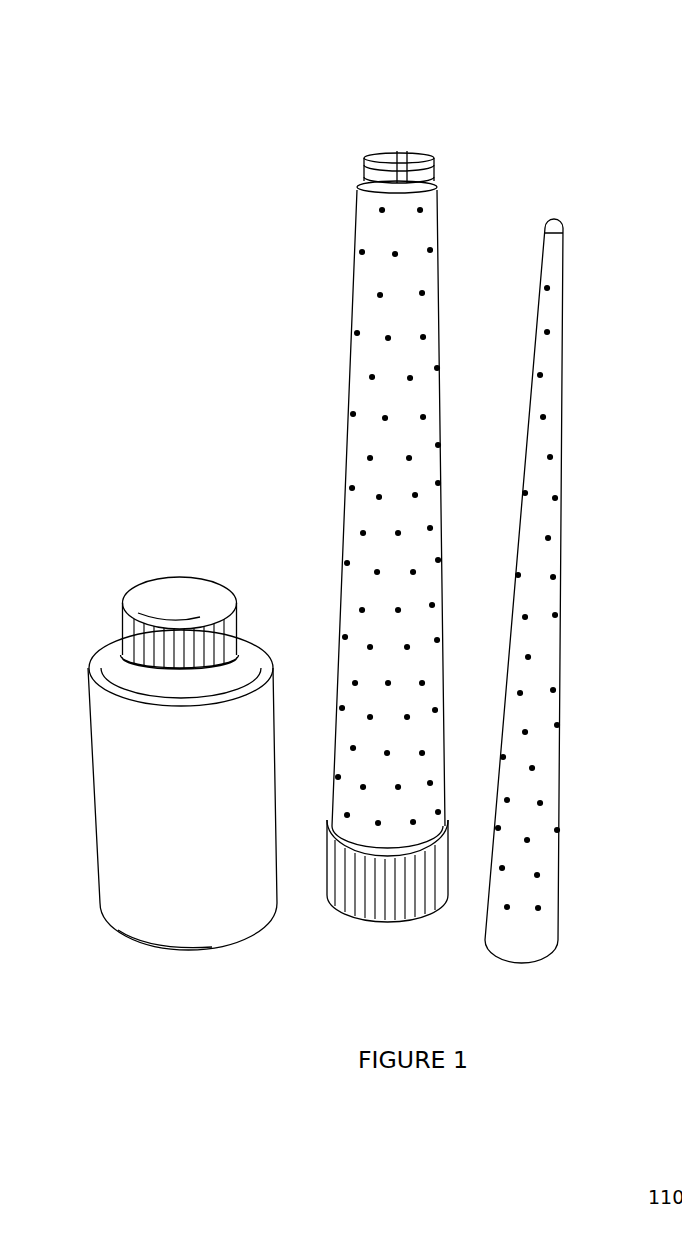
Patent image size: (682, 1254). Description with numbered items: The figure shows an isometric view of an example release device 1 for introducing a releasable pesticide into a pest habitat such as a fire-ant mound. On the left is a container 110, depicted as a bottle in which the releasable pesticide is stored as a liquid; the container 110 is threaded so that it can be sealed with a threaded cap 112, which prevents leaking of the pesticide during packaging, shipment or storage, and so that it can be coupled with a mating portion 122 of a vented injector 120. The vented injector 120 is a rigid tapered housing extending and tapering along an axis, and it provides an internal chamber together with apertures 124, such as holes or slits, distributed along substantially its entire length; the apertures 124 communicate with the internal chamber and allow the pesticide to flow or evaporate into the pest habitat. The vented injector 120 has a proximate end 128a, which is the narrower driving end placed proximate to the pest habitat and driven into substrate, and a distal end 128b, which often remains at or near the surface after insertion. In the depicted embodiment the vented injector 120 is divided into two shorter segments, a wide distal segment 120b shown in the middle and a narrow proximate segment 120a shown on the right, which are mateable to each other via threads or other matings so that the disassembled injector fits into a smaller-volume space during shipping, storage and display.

The release device 1 is at (125, 118).
The container 110 is at (173, 947).
The threaded cap 112 is at (130, 590).
The vented injector 120 is at (465, 165).
The proximate segment 120a is at (560, 480).
The distal segment 120b is at (352, 320).
The mating portion 122 is at (390, 946).
The apertures 124 is at (375, 415).
The proximate end 128a is at (556, 213).
The distal end 128b is at (416, 946).